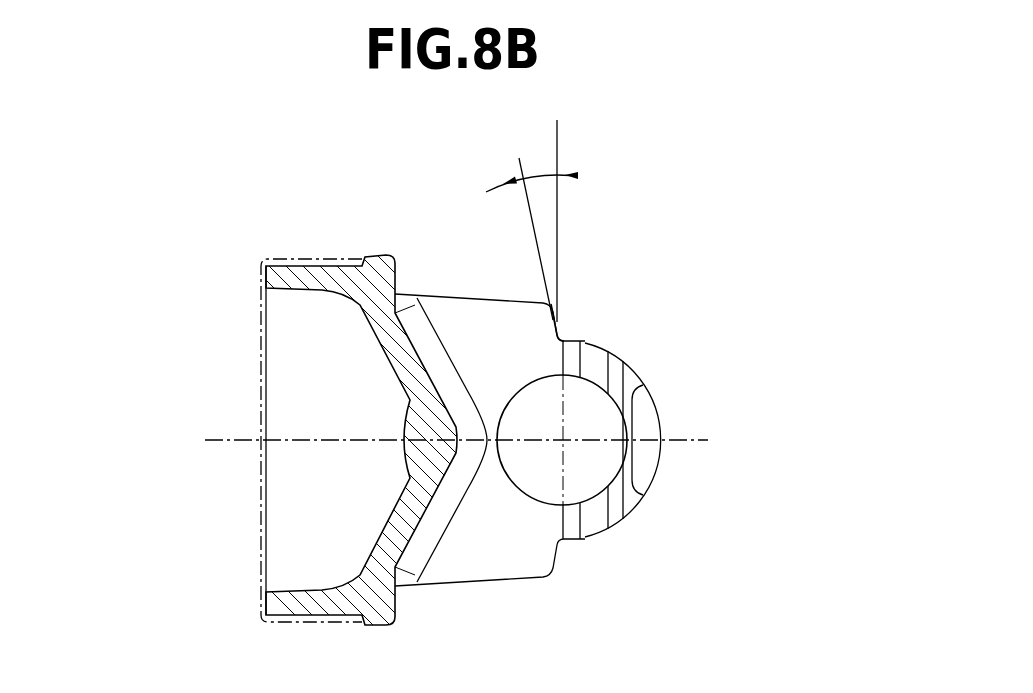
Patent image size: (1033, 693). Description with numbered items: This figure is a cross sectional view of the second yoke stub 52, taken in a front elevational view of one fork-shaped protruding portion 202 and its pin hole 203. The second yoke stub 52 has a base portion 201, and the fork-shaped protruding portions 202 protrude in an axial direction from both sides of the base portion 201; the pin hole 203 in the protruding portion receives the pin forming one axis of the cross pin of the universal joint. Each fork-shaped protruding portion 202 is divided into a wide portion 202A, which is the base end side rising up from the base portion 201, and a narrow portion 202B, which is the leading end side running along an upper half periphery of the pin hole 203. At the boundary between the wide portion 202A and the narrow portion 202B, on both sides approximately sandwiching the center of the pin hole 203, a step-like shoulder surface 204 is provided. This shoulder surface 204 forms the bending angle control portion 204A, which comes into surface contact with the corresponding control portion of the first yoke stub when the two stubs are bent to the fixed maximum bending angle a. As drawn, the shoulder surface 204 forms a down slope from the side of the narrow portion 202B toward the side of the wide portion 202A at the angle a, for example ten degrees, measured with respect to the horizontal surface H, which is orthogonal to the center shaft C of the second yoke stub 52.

The base portion 201 is at (331, 273).
The second yoke stub 52 is at (370, 245).
The fork-shaped protruding portion 202 is at (595, 400).
The wide portion 202A is at (460, 297).
The narrow portion 202B is at (653, 403).
The pin hole 203 is at (594, 380).
The shoulder surface 204 is at (558, 318).
The bending angle control portion 204A is at (560, 316).
The horizontal surface H is at (557, 140).
The maximum bending angle a is at (578, 176).
The center shaft C is at (687, 440).